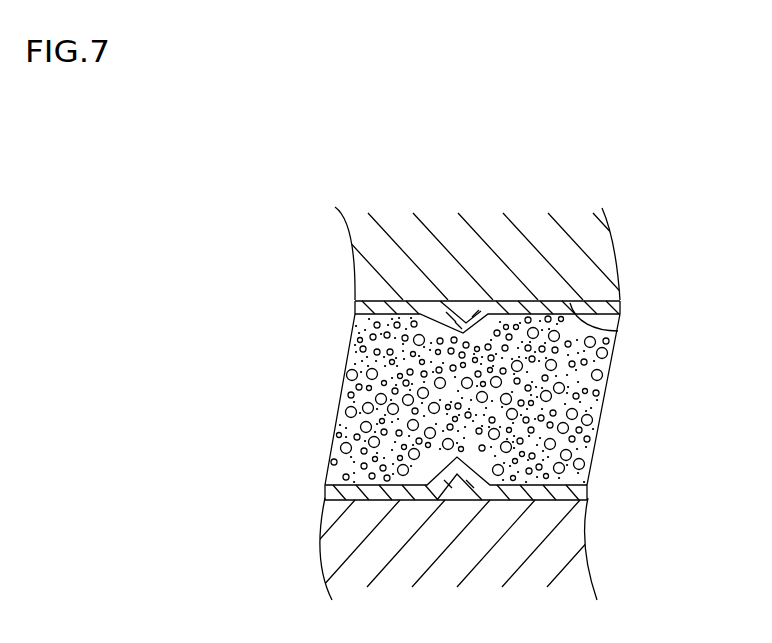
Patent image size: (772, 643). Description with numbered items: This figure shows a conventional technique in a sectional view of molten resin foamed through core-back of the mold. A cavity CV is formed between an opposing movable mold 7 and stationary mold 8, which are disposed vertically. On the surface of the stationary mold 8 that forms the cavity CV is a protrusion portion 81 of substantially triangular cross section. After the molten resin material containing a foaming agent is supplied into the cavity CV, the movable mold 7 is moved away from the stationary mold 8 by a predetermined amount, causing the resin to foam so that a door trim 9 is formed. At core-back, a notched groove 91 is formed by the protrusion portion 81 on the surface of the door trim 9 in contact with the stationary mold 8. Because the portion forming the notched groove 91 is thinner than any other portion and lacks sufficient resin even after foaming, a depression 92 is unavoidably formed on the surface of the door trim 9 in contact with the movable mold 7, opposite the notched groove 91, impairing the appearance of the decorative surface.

The movable mold 7 is at (614, 256).
The stationary mold 8 is at (580, 537).
The door trim 9 is at (356, 378).
The notched groove 91 is at (453, 487).
The depression 92 is at (449, 307).
The protrusion portion 81 is at (471, 472).
The cavity CV is at (618, 331).